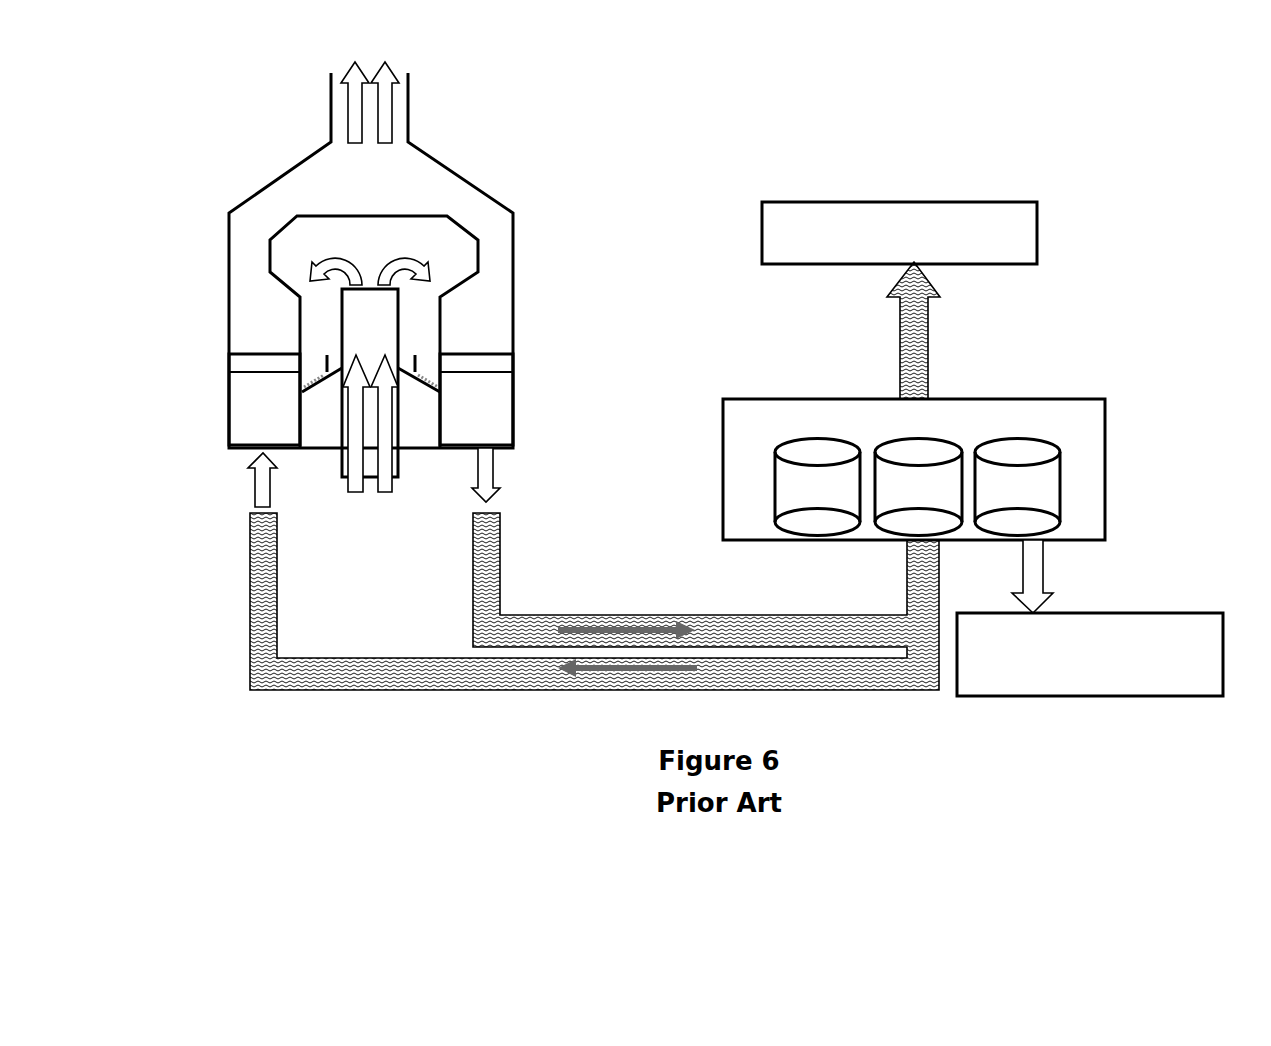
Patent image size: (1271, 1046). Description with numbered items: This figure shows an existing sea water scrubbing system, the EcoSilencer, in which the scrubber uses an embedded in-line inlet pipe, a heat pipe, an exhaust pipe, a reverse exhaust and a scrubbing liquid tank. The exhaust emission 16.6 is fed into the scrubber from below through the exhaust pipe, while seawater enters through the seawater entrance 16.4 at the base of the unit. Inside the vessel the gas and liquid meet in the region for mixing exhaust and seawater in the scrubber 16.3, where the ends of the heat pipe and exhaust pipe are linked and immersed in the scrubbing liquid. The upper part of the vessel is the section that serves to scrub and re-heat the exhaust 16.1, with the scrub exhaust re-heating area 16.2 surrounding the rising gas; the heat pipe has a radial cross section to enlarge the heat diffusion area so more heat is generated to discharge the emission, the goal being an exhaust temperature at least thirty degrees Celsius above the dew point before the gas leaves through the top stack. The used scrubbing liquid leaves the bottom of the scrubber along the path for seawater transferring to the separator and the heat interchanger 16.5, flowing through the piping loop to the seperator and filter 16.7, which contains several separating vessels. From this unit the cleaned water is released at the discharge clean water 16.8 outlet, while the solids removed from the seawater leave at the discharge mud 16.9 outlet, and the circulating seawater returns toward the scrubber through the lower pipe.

The scrub and re-heat the exhaust 16.1 is at (438, 198).
The scrub exhaust re-heating area 16.2 is at (467, 310).
The mixing exhaust and seawater in the scrubber 16.3 is at (473, 412).
The seawater entrance 16.4 is at (258, 478).
The seawater transferring to the separator and the heat interchanger 16.5 is at (493, 485).
The exhaust emission 16.6 is at (383, 502).
The seperator and filter 16.7 is at (792, 412).
The discharge clean water 16.8 is at (823, 213).
The discharge mud 16.9 is at (1125, 632).